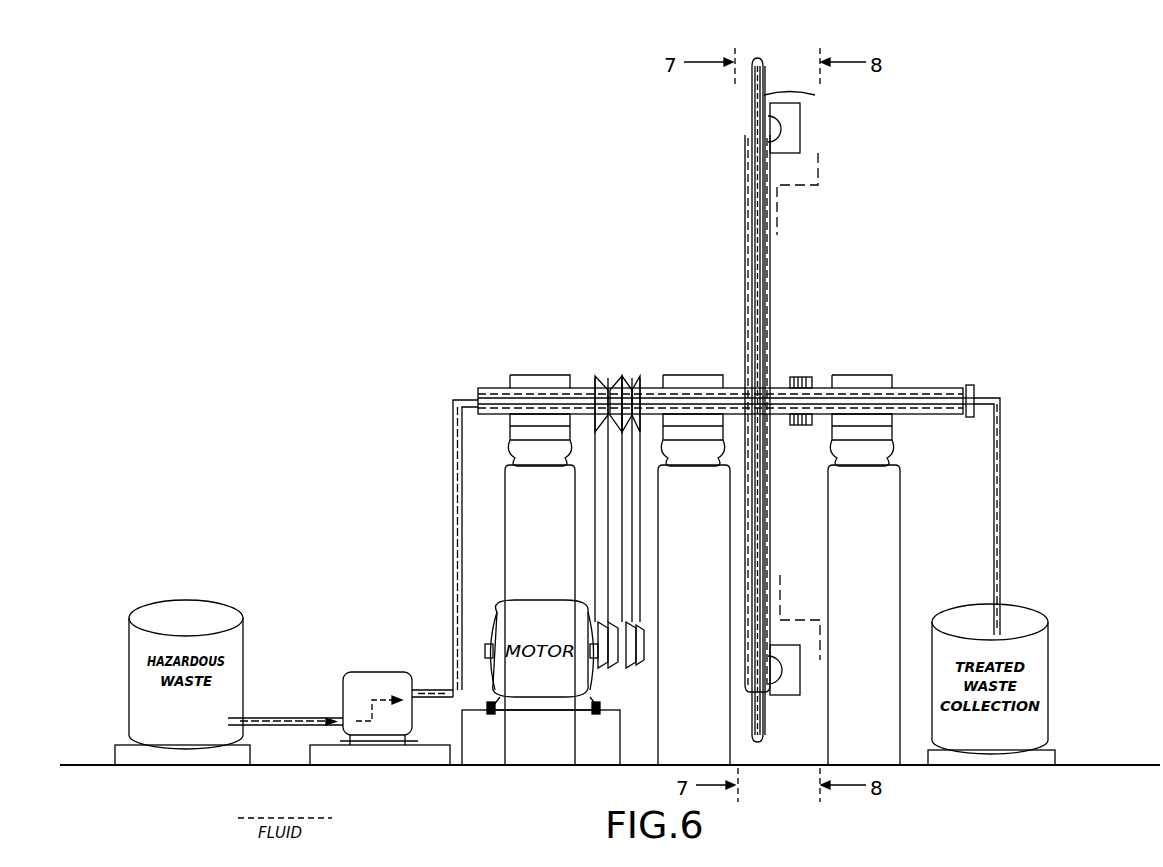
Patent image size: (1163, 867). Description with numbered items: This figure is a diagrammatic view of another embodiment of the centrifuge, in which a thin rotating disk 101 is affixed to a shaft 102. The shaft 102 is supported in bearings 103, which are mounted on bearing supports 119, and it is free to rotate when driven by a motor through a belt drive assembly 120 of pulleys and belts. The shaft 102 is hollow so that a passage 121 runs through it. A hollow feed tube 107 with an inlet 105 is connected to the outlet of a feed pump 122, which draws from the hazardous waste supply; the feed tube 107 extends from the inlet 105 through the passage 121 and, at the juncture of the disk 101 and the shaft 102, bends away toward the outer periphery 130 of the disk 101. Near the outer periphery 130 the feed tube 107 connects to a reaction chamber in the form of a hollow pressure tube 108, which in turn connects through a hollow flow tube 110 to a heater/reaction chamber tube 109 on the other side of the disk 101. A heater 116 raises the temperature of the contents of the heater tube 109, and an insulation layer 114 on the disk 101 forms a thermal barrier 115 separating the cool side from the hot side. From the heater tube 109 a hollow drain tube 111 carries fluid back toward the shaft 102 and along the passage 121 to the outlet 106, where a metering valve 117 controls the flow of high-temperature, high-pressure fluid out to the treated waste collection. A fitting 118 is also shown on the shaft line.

The rotating disk 101 is at (746, 82).
The shaft 102 is at (490, 388).
The bearings 103 is at (548, 375).
The inlet 105 is at (453, 400).
The outlet 106 is at (1000, 412).
The feed tube 107 is at (746, 332).
The pressure tube 108 is at (745, 135).
The heater/reaction chamber tube 109 is at (795, 150).
The flow tube 110 is at (763, 712).
The drain tube 111 is at (768, 328).
The insulation layer 114 is at (790, 100).
The thermal barrier 115 is at (777, 228).
The heater 116 is at (781, 118).
The metering valve 117 is at (978, 390).
The valve 118 is at (801, 377).
The bearing supports 119 is at (553, 549).
The belt drive assembly 120 is at (638, 455).
The passage 121 is at (932, 420).
The feed pump 122 is at (378, 672).
The outer periphery 130 is at (757, 54).